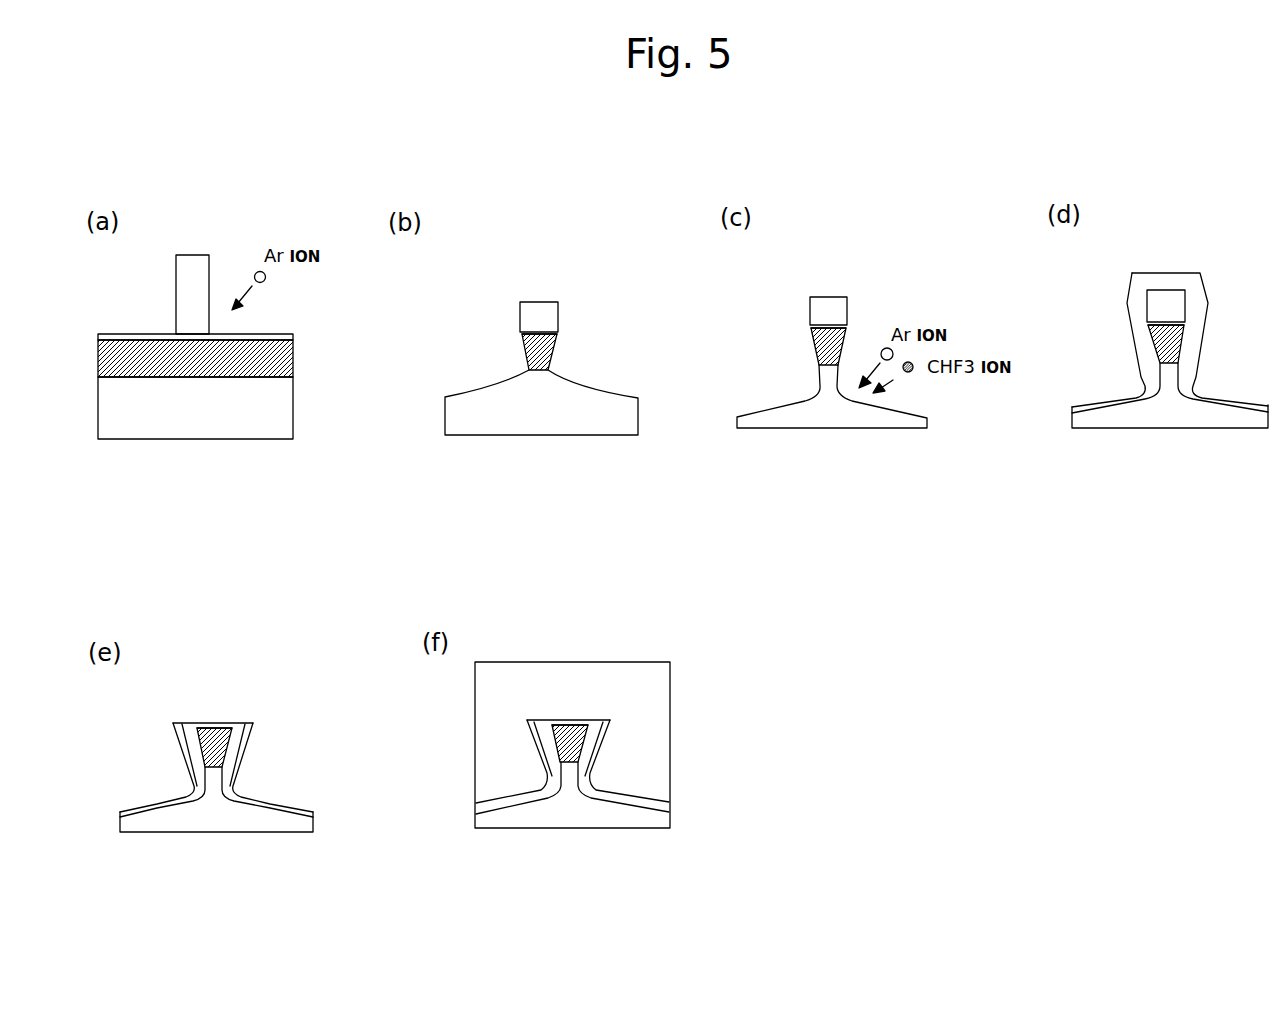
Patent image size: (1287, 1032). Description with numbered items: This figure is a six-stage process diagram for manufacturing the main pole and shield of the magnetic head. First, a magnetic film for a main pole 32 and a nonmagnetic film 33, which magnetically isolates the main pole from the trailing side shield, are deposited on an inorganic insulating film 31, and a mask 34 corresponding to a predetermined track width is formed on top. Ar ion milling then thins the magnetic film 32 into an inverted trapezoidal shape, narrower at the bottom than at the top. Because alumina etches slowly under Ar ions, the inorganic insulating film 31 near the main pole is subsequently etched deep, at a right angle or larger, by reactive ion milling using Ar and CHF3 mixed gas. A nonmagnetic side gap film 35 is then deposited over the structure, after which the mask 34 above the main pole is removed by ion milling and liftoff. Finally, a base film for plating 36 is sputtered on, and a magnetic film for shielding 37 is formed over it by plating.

The inorganic insulating film 31 is at (180, 432).
The magnetic film for a main pole 32 is at (293, 350).
The nonmagnetic film 33 is at (273, 332).
The mask 34 is at (195, 258).
The nonmagnetic side gap film 35 is at (1175, 272).
The base film for plating 36 is at (598, 783).
The magnetic film for shielding 37 is at (655, 677).